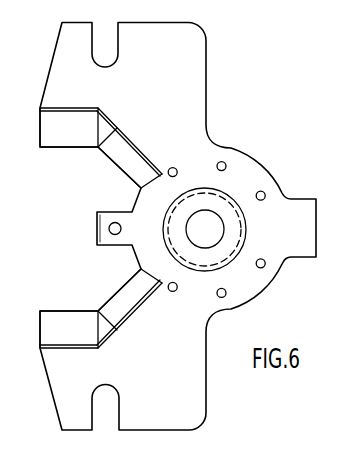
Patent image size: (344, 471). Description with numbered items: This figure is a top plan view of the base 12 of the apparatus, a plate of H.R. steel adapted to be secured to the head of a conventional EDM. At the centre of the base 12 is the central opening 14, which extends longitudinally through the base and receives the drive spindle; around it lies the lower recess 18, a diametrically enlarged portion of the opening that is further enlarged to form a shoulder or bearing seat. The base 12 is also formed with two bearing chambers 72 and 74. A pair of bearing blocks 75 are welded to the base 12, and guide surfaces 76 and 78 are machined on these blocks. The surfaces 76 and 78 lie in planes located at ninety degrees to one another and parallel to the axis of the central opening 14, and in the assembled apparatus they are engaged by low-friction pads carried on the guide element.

The base 12 is at (215, 66).
The central opening 14 is at (203, 210).
The lower recess 18 is at (217, 194).
The bearing chamber 72 is at (83, 185).
The bearing chamber 74 is at (74, 285).
The bearing block 75 is at (130, 150).
The guide surface 76 is at (107, 156).
The guide surface 78 is at (127, 283).